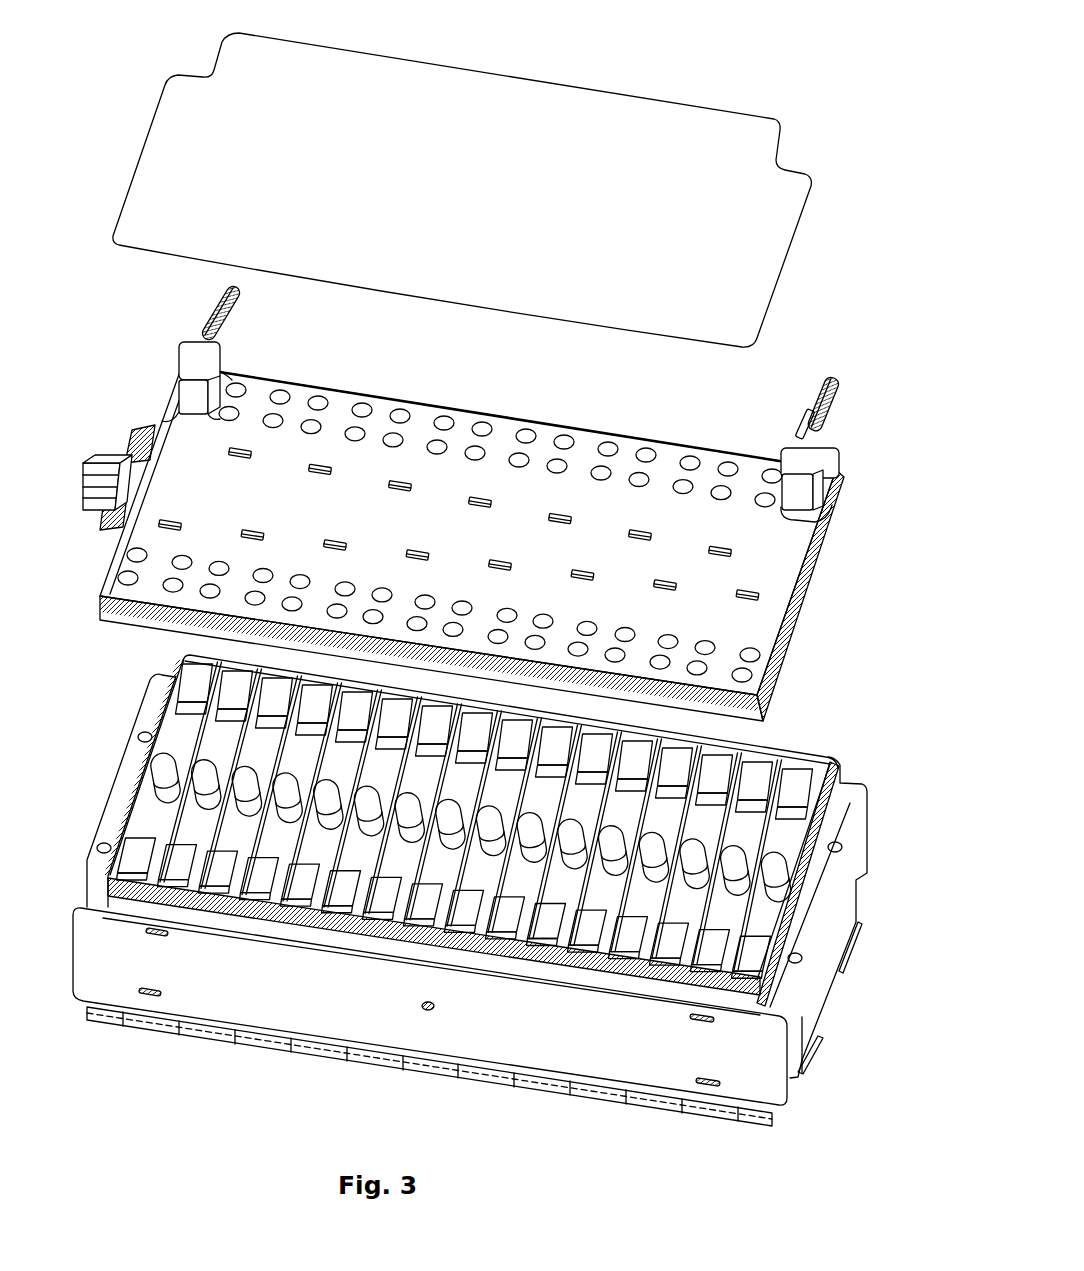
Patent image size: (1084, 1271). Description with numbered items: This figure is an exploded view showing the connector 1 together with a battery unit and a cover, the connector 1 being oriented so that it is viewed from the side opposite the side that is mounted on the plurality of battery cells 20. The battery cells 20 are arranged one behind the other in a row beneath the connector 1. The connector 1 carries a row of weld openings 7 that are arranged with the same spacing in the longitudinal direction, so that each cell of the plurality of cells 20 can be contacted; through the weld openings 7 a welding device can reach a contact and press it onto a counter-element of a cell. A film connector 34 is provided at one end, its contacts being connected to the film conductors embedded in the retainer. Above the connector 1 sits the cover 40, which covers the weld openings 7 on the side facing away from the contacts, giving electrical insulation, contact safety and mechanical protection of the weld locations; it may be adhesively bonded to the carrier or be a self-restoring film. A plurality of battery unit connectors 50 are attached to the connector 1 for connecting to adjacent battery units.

The connector 1 is at (501, 579).
The weld openings 7 is at (765, 660).
The battery cells 20 is at (793, 833).
The film connector 34 is at (103, 460).
The cover 40 is at (737, 158).
The battery unit connectors 50 is at (206, 314).